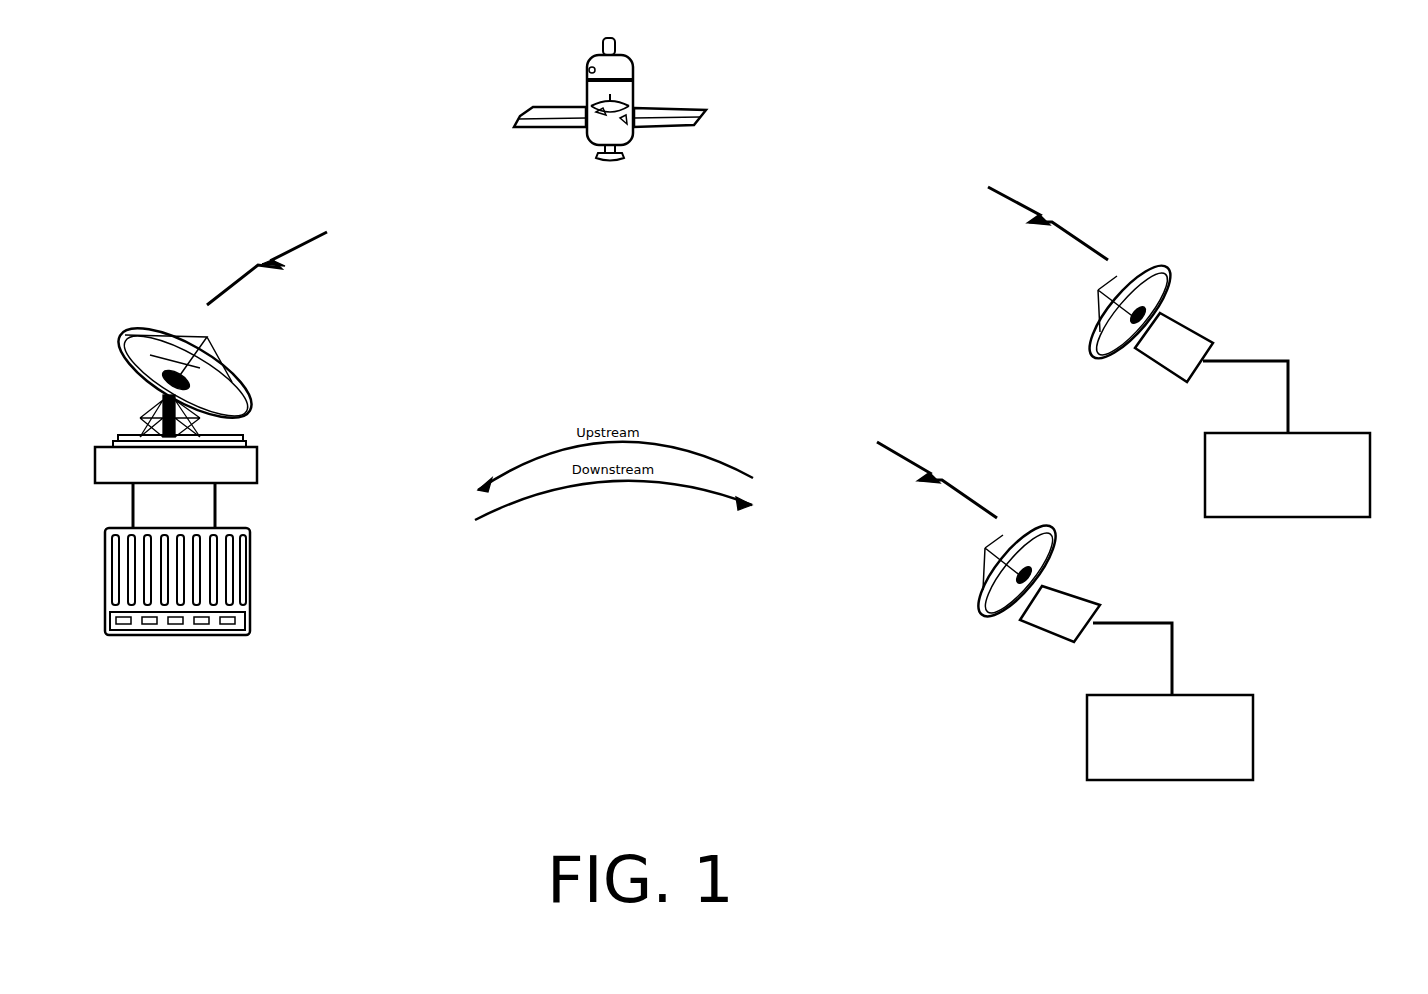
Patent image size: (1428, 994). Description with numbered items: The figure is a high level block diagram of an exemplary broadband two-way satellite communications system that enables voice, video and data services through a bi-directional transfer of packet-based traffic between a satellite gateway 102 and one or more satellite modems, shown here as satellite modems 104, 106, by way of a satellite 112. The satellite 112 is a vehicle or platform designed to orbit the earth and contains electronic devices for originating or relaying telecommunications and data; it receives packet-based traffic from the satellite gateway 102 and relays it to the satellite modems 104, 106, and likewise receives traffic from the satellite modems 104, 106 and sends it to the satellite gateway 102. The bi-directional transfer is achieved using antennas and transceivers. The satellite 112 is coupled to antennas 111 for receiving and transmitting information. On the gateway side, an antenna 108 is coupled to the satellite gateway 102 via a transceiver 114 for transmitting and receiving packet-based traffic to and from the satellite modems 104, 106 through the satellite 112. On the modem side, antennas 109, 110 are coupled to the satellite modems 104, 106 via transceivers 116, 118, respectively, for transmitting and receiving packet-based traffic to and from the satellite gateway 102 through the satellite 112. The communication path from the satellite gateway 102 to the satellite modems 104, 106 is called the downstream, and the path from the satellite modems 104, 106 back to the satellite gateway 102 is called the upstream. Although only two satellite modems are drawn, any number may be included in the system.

The satellite gateway 102 is at (232, 586).
The satellite modem 104 is at (1222, 696).
The satellite modem 106 is at (1347, 435).
The antenna 108 is at (157, 352).
The antenna 109 is at (1010, 545).
The antenna 110 is at (1123, 278).
The antennas 111 is at (530, 111).
The satellite 112 is at (620, 73).
The transceiver 114 is at (258, 467).
The transceiver 116 is at (1048, 618).
The transceiver 118 is at (1185, 312).